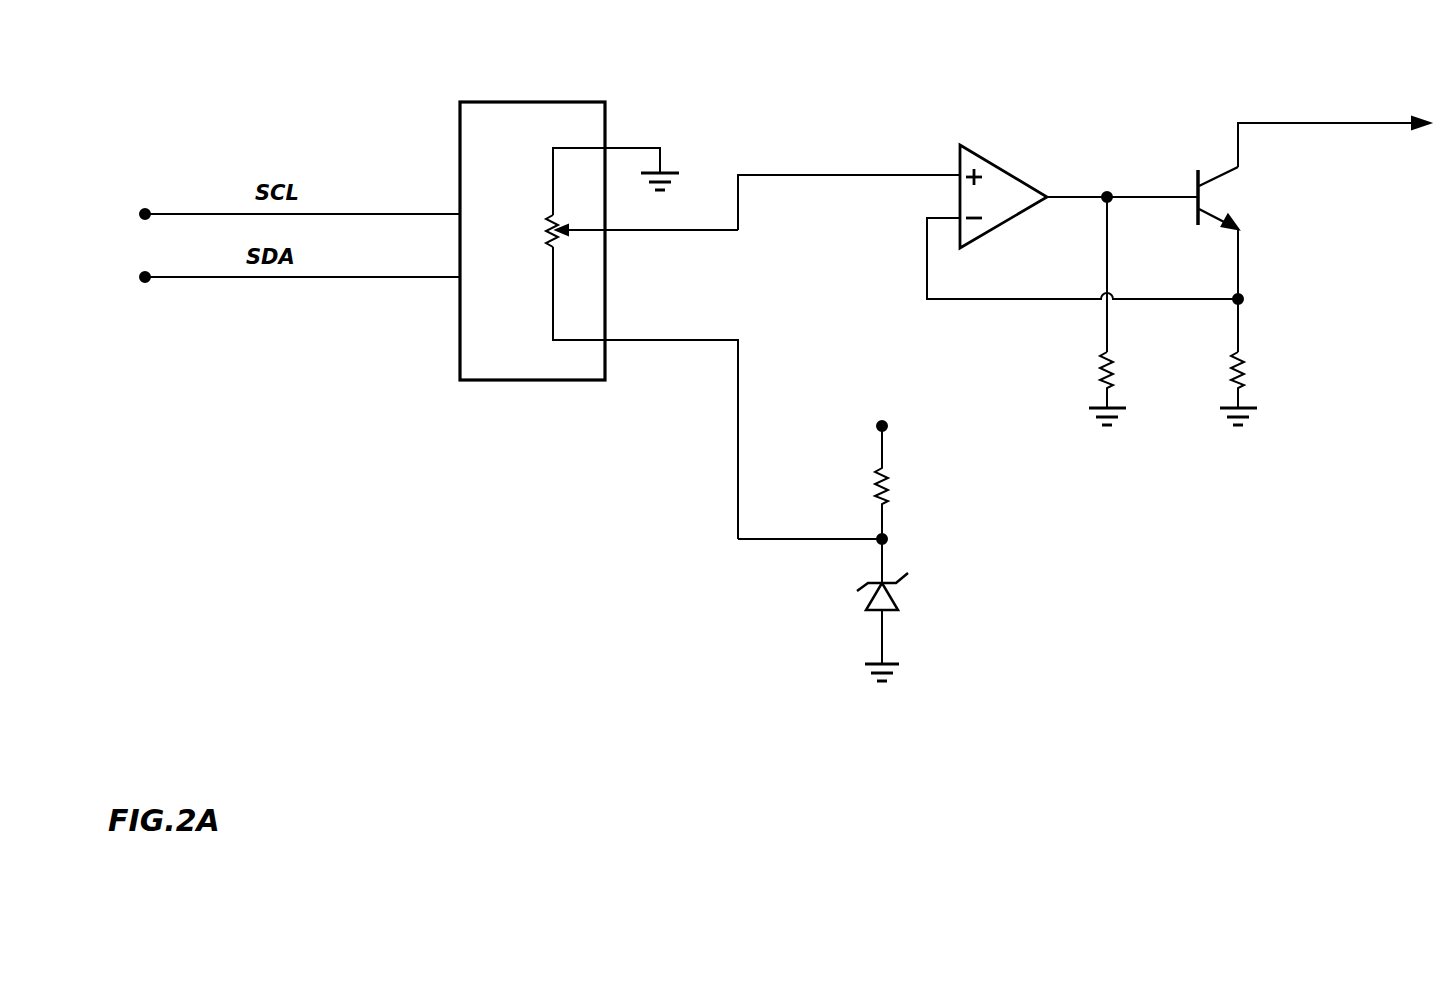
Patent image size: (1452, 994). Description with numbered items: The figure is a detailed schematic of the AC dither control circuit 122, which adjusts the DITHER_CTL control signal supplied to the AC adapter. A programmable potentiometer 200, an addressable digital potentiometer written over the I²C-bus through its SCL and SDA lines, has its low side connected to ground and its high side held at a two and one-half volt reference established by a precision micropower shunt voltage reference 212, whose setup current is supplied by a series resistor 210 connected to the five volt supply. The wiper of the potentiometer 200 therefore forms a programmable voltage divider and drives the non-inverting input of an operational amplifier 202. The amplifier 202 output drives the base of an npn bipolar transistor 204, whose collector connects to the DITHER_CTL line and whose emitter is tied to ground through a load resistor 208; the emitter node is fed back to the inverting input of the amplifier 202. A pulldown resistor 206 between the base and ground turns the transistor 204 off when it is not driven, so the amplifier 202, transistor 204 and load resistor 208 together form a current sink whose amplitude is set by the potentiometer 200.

The AC dither control circuit 122 is at (876, 90).
The programmable potentiometer 200 is at (536, 102).
The operational amplifier 202 is at (1002, 165).
The bipolar transistor 204 is at (1219, 170).
The pulldown resistor 206 is at (1100, 365).
The load resistor 208 is at (1245, 370).
The series resistor 210 is at (888, 480).
The shunt voltage reference 212 is at (898, 600).